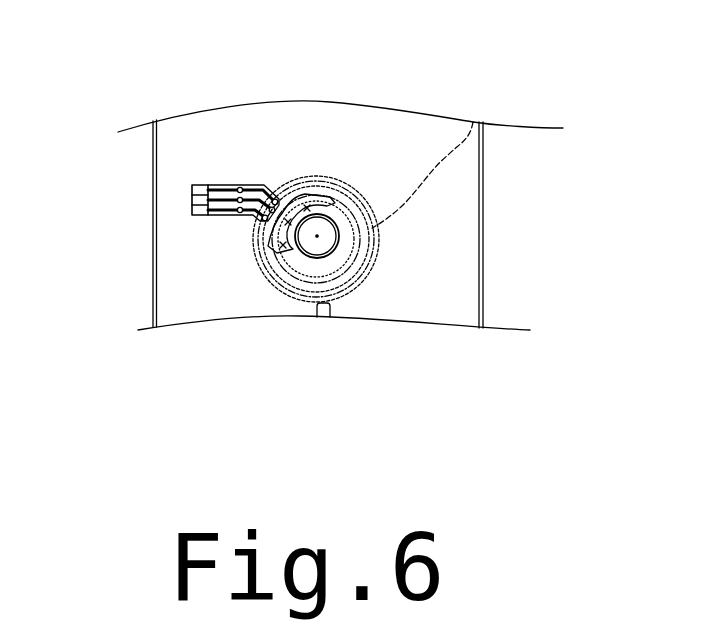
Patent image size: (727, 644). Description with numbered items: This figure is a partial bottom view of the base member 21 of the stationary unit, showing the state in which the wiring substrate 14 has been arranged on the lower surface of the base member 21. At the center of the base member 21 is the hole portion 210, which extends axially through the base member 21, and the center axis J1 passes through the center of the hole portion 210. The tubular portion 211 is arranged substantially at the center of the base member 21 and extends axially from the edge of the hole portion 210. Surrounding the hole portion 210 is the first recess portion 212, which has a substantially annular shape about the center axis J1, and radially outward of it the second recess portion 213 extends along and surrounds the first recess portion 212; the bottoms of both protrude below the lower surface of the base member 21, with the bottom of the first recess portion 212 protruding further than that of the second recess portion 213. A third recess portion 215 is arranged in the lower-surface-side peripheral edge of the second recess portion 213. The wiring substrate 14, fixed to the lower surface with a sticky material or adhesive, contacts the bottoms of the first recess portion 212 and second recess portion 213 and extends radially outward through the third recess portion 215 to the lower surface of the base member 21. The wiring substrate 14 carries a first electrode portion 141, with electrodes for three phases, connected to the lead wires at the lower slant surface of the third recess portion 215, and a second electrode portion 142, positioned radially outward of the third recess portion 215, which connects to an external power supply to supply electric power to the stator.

The wiring substrate 14 is at (192, 188).
The first electrode portion 141 is at (273, 197).
The second electrode portion 142 is at (252, 184).
The base member 21 is at (478, 176).
The tubular portion 211 is at (335, 223).
The first recess portion 212 is at (347, 252).
The second recess portion 213 is at (361, 233).
The third recess portion 215 is at (256, 222).
The hole portion 210 is at (317, 240).
The center axis J1 is at (319, 240).